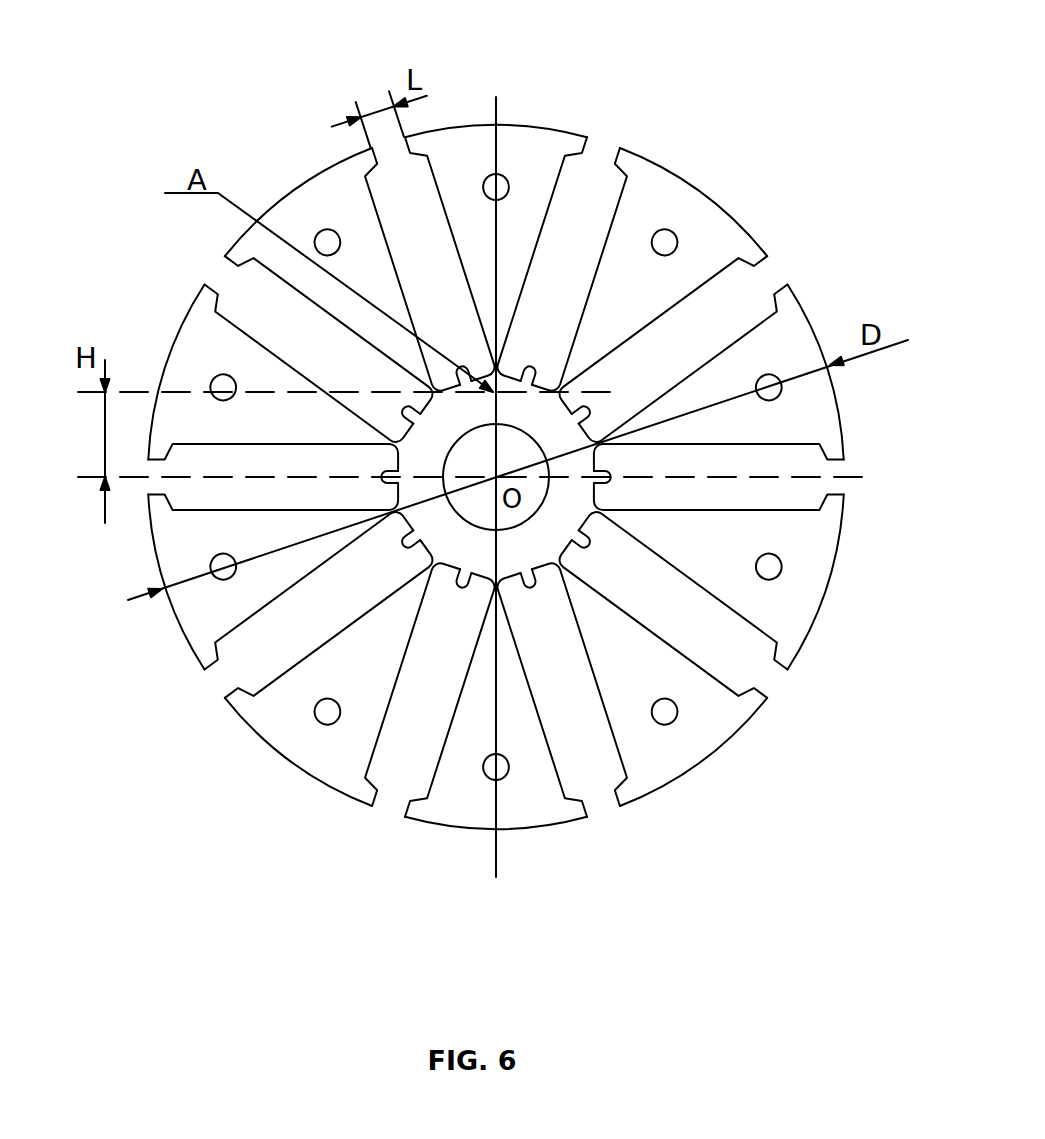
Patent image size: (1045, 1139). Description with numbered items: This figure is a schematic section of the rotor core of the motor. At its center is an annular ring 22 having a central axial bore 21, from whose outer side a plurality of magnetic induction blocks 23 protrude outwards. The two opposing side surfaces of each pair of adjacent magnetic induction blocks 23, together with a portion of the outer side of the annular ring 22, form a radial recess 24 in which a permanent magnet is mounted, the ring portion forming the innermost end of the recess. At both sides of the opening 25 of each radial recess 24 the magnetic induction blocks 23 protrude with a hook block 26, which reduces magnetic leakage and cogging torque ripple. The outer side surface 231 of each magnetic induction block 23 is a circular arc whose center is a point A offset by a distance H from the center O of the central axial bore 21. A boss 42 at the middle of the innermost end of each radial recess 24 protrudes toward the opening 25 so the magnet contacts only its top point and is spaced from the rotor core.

The central axial bore 21 is at (467, 493).
The annular ring 22 is at (515, 545).
The magnetic induction block 23 is at (357, 648).
The outer side surface 231 is at (181, 640).
The radial recess 24 is at (712, 635).
The opening 25 is at (607, 805).
The hook block 26 is at (417, 145).
The boss 42 is at (535, 358).